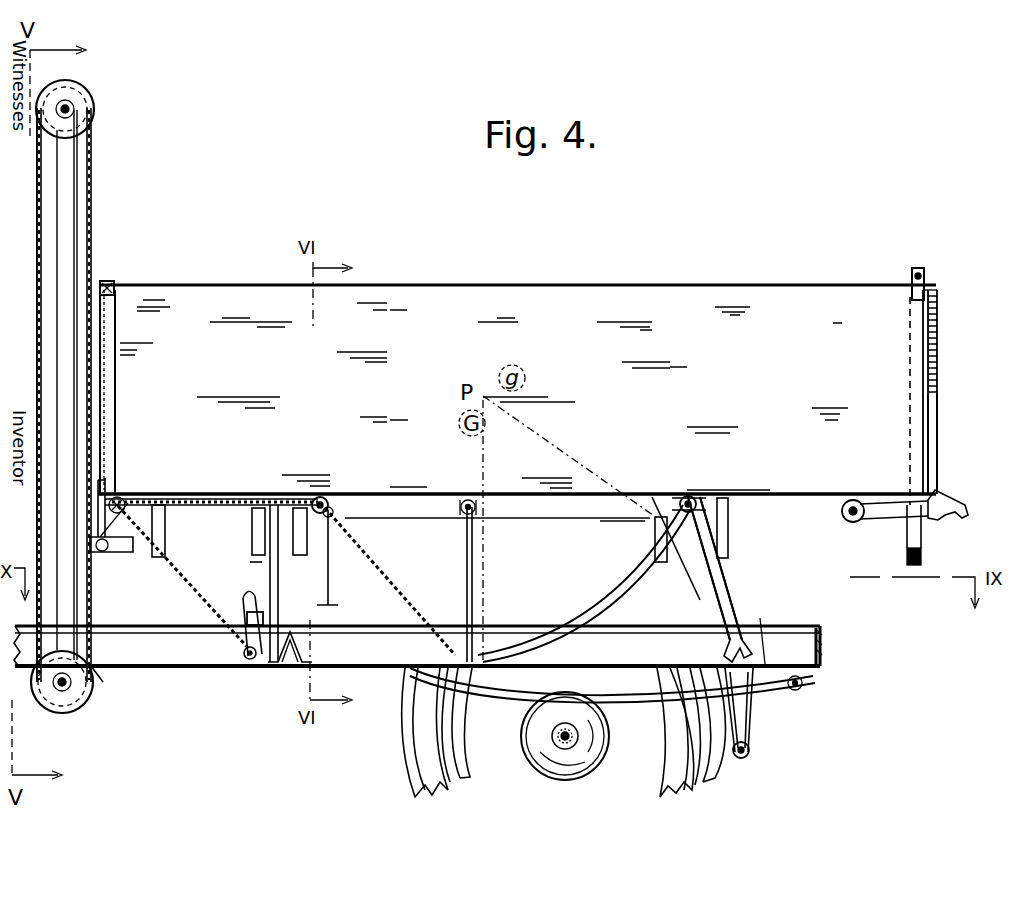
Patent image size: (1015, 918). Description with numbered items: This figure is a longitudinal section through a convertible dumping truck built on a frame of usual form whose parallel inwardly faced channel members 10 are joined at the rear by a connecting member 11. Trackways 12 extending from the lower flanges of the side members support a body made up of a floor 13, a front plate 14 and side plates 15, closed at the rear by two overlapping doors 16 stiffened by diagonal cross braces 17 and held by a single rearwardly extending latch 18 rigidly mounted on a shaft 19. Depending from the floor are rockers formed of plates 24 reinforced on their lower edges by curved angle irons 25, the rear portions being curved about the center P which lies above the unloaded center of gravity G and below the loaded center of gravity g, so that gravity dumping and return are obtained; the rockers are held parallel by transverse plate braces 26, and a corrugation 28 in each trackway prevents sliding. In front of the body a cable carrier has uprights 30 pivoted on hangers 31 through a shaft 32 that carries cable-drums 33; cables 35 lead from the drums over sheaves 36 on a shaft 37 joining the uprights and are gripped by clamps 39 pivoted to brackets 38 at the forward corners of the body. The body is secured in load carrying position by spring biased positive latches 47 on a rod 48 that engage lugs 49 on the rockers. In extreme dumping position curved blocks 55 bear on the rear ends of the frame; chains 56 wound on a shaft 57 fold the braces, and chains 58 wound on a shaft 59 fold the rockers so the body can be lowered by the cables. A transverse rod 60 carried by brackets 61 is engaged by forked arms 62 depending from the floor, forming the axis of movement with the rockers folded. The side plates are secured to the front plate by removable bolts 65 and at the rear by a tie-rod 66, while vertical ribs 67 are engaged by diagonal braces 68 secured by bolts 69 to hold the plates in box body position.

The channel members 10 is at (780, 640).
The rear connecting member 11 is at (824, 650).
The trackways 12 is at (734, 580).
The floor 13 is at (790, 493).
The front plate 14 is at (110, 397).
The side plates 15 is at (710, 298).
The doors 16 is at (925, 374).
The diagonal cross braces 17 is at (938, 445).
The latch 18 is at (955, 505).
The shaft 19 is at (847, 521).
The plates 24 is at (253, 563).
The curved angle irons 25 is at (650, 625).
The braces 26 is at (277, 552).
The corrugation 28 is at (293, 643).
The uprights 30 is at (73, 188).
The hangers 31 is at (48, 682).
The shaft 32 is at (55, 690).
The cable-drums 33 is at (90, 690).
The cables 35 is at (36, 284).
The sheaves 36 is at (68, 72).
The shaft 37 is at (68, 106).
The brackets 38 is at (108, 488).
The clamps 39 is at (118, 552).
The positive latches 47 is at (248, 613).
The rod 48 is at (250, 660).
The lugs 49 is at (270, 613).
The curved blocks 55 is at (700, 500).
The chains 56 is at (203, 596).
The shaft 57 is at (130, 500).
The chains 58 is at (330, 562).
The shaft 59 is at (326, 500).
The transverse rod 60 is at (746, 757).
The brackets 61 is at (750, 732).
The forked arms 62 is at (722, 585).
The removable bolts 65 is at (110, 281).
The tie-rod 66 is at (912, 276).
The vertical ribs 67 is at (165, 530).
The diagonal braces 68 is at (907, 538).
The bolts 69 is at (915, 565).